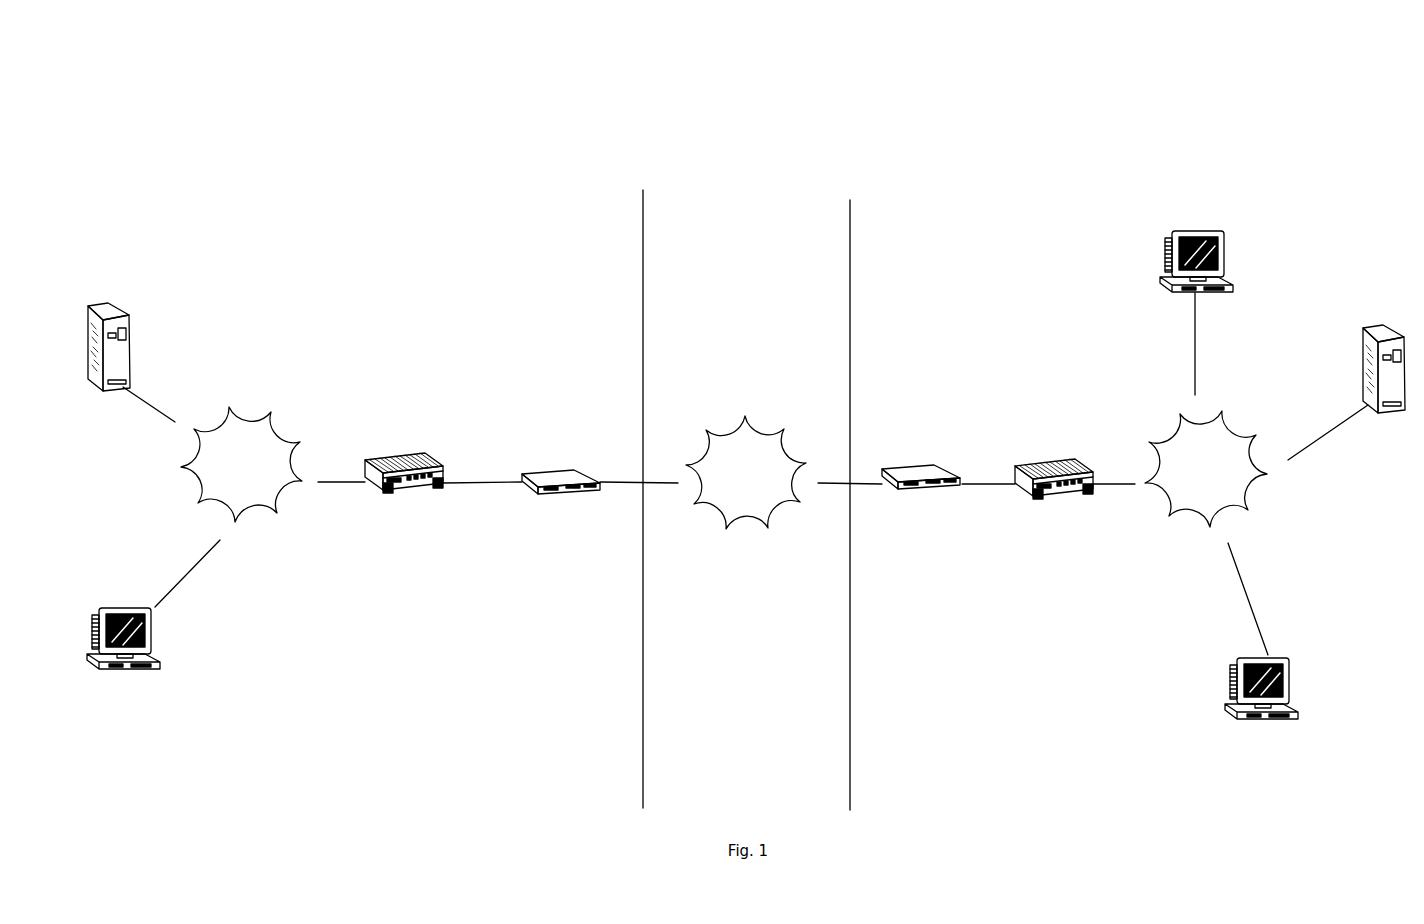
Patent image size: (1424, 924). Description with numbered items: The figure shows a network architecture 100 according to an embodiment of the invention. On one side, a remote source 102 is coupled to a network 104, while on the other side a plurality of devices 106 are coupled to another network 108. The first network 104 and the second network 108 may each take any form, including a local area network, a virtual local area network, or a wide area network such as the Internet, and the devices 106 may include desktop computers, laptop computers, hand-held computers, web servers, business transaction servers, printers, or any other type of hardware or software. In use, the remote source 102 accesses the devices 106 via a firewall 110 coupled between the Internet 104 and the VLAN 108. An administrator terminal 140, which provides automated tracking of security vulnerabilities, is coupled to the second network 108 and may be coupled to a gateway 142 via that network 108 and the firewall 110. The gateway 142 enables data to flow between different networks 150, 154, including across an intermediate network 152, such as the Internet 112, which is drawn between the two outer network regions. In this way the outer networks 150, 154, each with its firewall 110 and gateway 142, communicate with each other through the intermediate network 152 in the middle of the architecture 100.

The network architecture 100 is at (323, 172).
The remote source 102 is at (132, 330).
The network 104 is at (297, 532).
The devices 106 is at (1378, 327).
The network 108 is at (1253, 410).
The firewall 110 is at (413, 452).
The Internet 112 is at (733, 400).
The administrator terminal 140 is at (1230, 242).
The gateway 142 is at (565, 492).
The network 150 is at (453, 717).
The intermediate network 152 is at (746, 500).
The network 154 is at (997, 727).